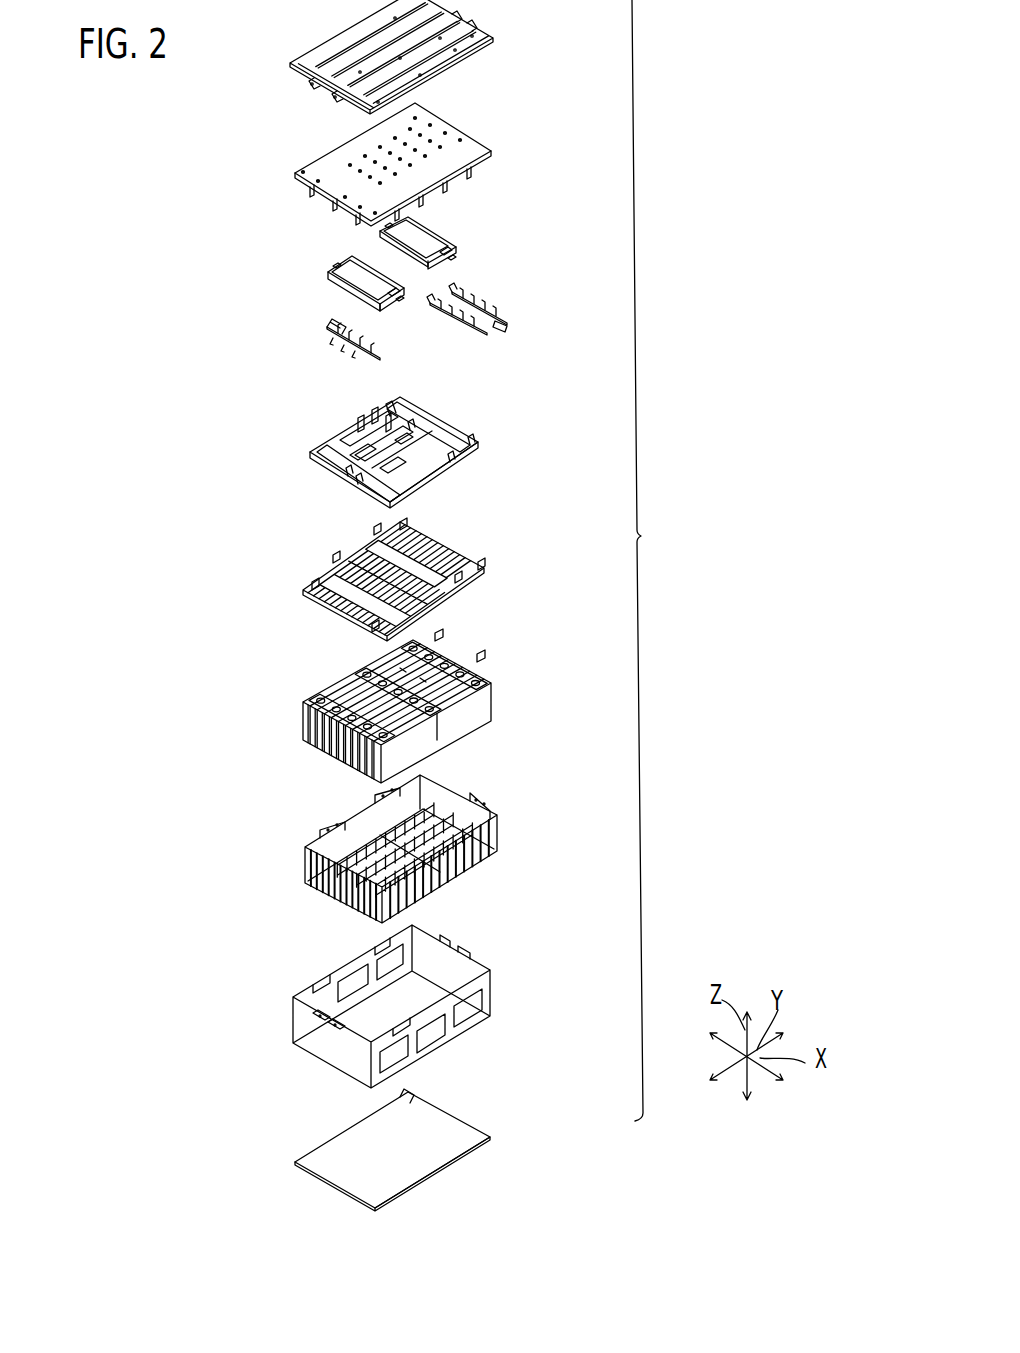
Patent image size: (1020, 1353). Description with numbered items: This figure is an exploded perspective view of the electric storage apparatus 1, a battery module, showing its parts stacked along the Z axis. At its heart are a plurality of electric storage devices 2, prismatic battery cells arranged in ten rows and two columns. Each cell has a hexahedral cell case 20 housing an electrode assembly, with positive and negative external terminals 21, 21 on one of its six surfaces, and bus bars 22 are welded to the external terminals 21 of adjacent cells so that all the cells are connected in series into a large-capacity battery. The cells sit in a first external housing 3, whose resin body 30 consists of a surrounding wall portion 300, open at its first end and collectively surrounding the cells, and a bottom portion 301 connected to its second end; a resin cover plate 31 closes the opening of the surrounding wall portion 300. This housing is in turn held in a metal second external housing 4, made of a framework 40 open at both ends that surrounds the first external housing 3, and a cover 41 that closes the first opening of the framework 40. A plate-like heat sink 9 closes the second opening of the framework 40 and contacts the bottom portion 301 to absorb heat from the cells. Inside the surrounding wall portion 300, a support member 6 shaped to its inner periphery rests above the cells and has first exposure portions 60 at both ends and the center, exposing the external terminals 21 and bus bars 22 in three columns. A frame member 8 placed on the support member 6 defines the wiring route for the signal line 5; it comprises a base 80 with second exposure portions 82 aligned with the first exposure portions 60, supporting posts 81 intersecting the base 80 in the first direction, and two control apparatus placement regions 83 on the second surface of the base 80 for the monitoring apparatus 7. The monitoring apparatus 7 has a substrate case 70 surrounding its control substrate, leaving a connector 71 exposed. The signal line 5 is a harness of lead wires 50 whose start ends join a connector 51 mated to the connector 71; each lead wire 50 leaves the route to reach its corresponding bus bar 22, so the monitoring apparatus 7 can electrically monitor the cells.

The electric storage apparatus 1 is at (648, 560).
The electric storage device 2 is at (421, 690).
The cell case 20 is at (312, 697).
The external terminal 21 is at (375, 689).
The bus bar 22 is at (454, 726).
The first external housing 3 is at (431, 513).
The body 30 is at (431, 840).
The cover plate 31 is at (503, 150).
The surrounding wall portion 300 is at (305, 875).
The bottom portion 301 is at (432, 812).
The second external housing 4 is at (456, 544).
The framework 40 is at (500, 987).
The cover 41 is at (500, 30).
The signal line 5 is at (443, 336).
The lead wire 50 is at (375, 353).
The connector 51 is at (313, 314).
The support member 6 is at (418, 561).
The first exposure portion 60 is at (440, 532).
The monitoring apparatus 7 is at (435, 264).
The substrate case 70 is at (350, 278).
The connector 71 is at (312, 255).
The frame member 8 is at (427, 438).
The base 80 is at (318, 453).
The supporting post 81 is at (415, 428).
The second exposure portion 82 is at (357, 418).
The control apparatus placement region 83 is at (362, 470).
The heat sink 9 is at (480, 1128).